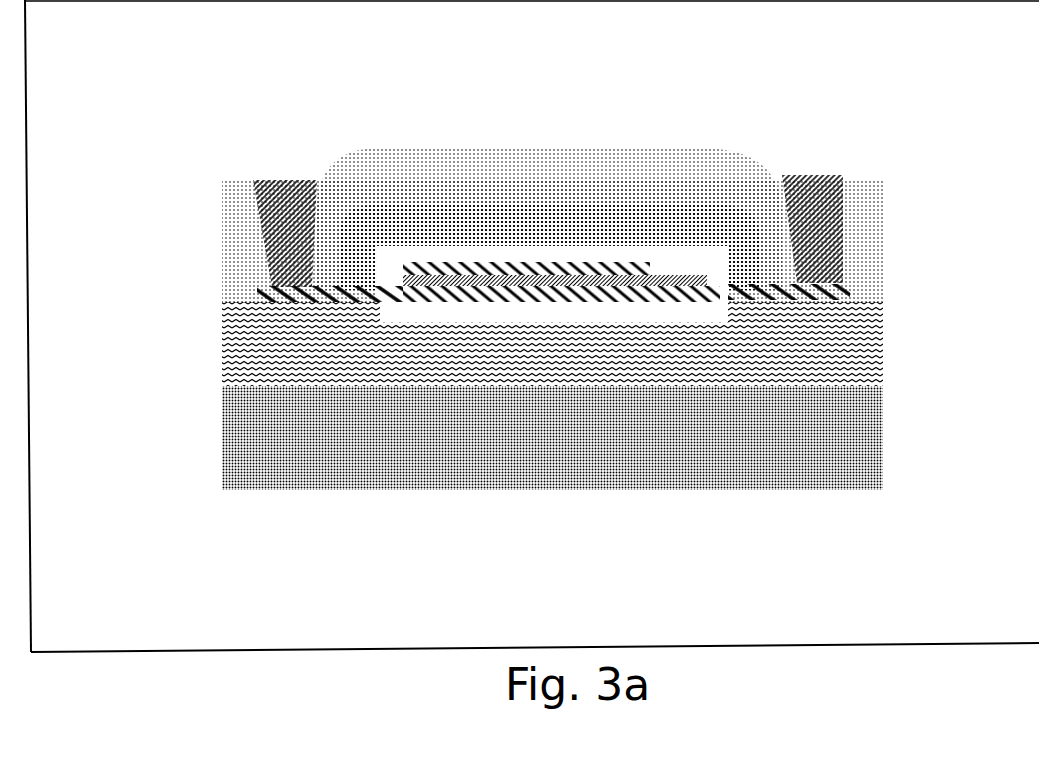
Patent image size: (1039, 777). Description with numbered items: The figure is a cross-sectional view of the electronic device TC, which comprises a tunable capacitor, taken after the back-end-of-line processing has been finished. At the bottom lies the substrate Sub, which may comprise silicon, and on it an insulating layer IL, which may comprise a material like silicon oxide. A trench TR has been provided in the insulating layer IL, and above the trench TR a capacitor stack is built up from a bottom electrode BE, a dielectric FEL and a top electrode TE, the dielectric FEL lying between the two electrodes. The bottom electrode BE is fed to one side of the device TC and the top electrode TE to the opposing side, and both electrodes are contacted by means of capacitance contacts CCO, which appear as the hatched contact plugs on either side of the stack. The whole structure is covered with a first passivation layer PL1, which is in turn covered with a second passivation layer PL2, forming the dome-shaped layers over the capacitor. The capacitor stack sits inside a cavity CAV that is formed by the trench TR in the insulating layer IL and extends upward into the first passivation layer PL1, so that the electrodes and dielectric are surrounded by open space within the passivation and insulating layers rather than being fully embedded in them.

The electronic device TC is at (185, 113).
The capacitance contacts CCO is at (278, 216).
The cavity CAV is at (455, 250).
The first passivation layer PL1 is at (500, 236).
The second passivation layer PL2 is at (570, 188).
The top electrode TE is at (598, 270).
The dielectric FEL is at (535, 285).
The bottom electrode BE is at (455, 290).
The trench TR is at (400, 312).
The insulating layer IL is at (837, 328).
The substrate Sub is at (825, 442).